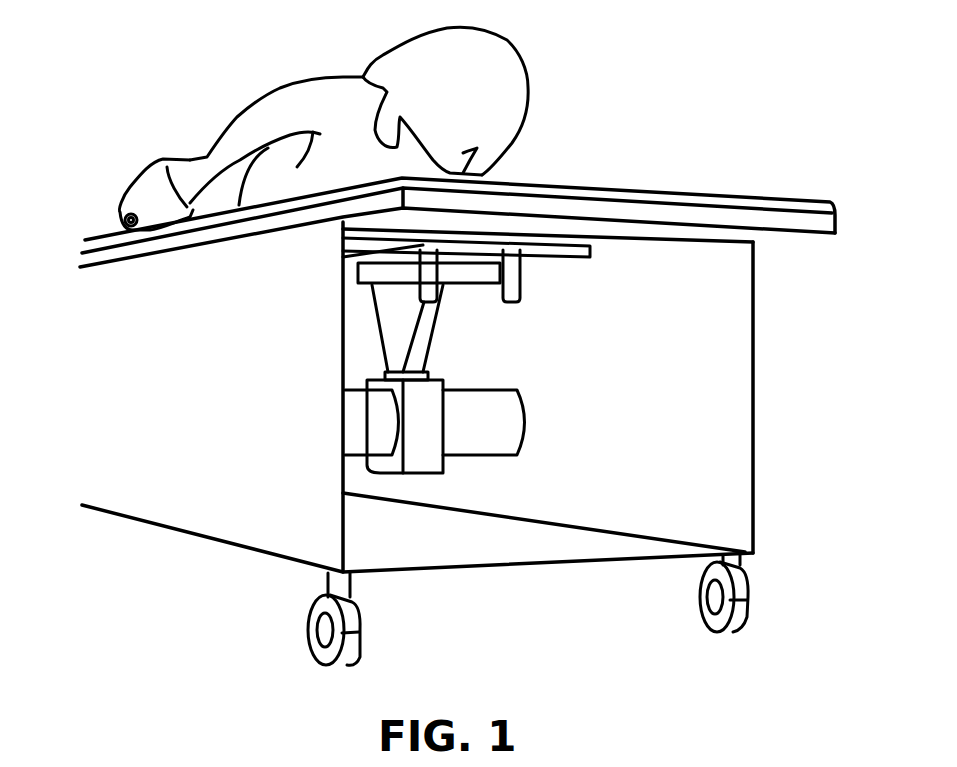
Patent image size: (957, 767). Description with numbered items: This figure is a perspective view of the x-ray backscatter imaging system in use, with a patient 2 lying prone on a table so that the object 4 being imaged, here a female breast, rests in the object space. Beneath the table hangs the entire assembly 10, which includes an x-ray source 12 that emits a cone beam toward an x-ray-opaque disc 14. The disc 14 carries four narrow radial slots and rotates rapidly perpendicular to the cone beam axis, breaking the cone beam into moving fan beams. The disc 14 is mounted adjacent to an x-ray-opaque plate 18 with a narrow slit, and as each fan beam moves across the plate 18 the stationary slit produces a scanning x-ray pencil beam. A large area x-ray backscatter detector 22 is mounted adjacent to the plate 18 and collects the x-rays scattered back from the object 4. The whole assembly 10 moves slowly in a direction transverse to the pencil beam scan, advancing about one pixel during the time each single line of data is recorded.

The patient 2 is at (306, 80).
The object 4 is at (316, 178).
The assembly 10 is at (522, 358).
The x-ray source 12 is at (530, 438).
The x-ray-opaque disc 14 is at (462, 287).
The x-ray-opaque plate 18 is at (524, 262).
The x-ray backscatter detector 22 is at (592, 245).